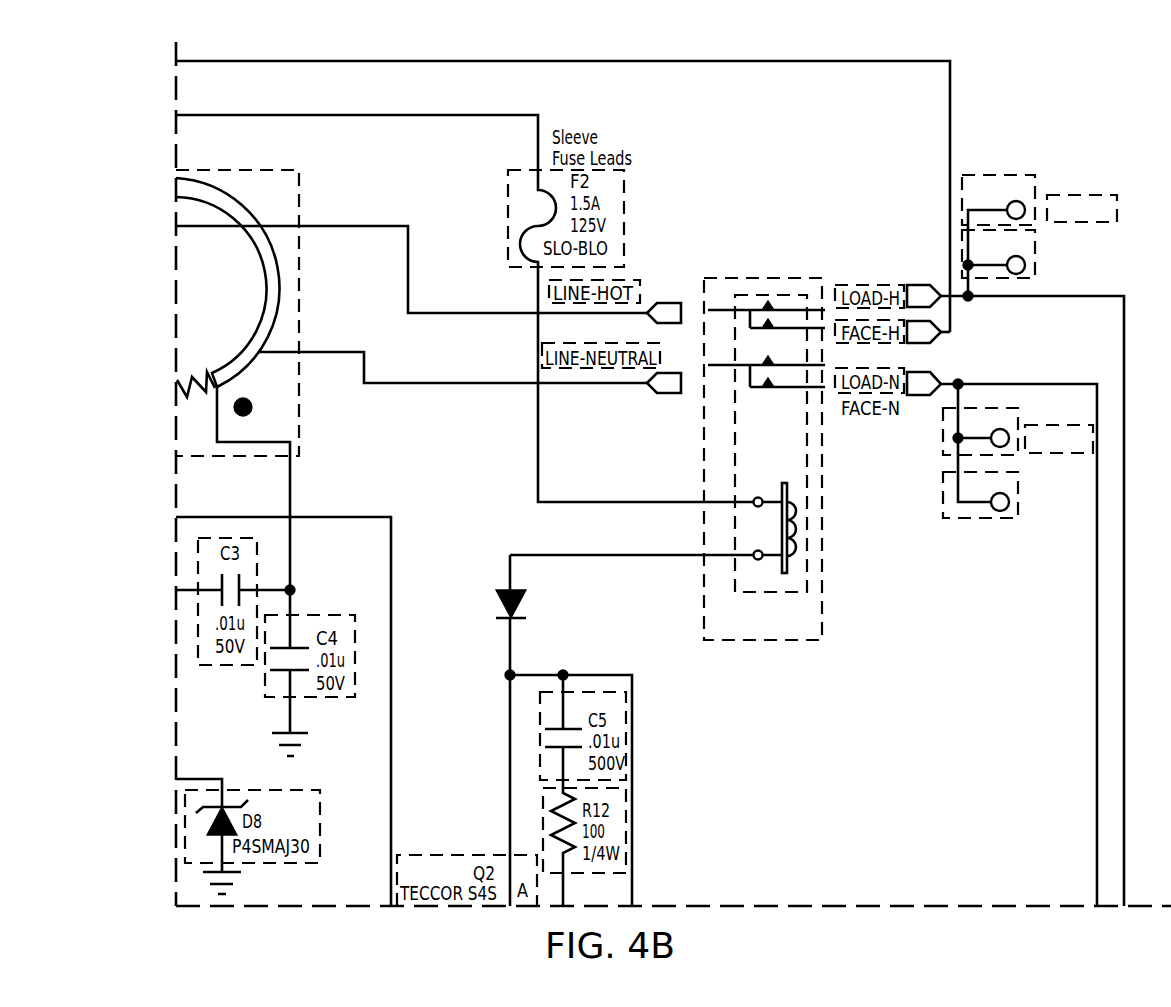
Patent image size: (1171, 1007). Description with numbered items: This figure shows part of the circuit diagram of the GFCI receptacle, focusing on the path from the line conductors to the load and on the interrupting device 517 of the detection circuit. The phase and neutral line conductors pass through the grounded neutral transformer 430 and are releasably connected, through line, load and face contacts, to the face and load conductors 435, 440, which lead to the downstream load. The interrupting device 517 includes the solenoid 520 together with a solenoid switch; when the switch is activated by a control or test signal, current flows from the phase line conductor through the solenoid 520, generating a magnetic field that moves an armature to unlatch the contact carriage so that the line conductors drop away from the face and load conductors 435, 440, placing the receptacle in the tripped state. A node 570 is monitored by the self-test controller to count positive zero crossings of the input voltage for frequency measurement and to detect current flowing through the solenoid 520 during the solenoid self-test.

The grounded neutral transformer 430 is at (228, 193).
The face and load conductor (phase) 435 is at (1090, 293).
The face and load conductor (neutral) 440 is at (1097, 527).
The interrupting device 517 is at (777, 697).
The solenoid 520 is at (713, 590).
The node 570 is at (508, 672).